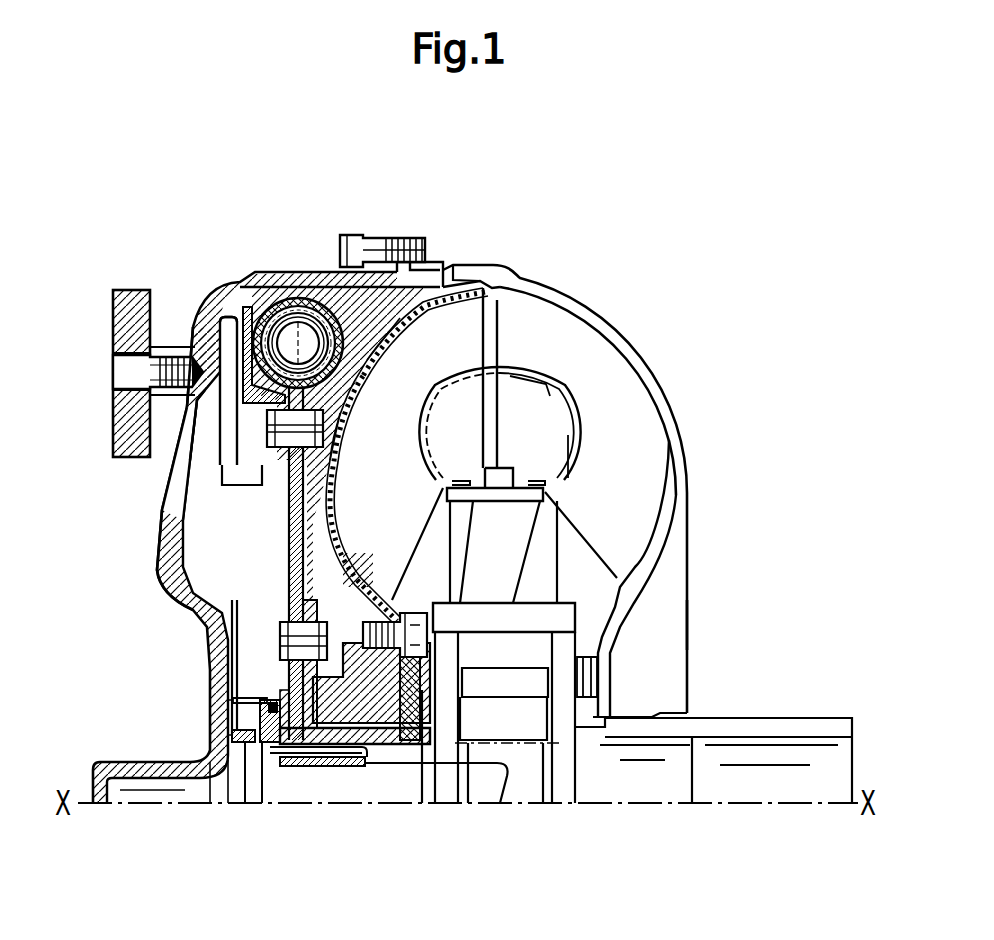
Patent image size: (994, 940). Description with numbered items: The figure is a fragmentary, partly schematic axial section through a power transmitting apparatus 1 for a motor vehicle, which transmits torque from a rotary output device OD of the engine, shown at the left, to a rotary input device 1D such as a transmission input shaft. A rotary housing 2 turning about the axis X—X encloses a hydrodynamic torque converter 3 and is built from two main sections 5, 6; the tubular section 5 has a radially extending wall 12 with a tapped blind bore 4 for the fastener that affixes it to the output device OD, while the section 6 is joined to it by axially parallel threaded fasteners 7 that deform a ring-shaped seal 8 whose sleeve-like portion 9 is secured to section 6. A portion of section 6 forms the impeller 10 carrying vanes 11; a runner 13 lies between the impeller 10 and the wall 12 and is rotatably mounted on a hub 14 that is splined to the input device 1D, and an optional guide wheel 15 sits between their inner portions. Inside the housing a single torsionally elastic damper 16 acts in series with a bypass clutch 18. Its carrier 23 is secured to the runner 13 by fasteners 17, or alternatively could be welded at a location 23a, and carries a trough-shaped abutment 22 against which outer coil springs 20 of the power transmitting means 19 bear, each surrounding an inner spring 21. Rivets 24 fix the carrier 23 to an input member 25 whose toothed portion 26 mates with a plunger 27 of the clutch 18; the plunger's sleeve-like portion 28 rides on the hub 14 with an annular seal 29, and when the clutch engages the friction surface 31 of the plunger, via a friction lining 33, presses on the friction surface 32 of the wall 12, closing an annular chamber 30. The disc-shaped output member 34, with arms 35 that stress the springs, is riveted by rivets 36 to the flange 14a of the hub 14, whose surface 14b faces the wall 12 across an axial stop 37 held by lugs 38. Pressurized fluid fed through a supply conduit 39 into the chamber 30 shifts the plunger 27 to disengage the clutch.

The power transmitting apparatus 1 is at (463, 190).
The rotary housing 2 is at (515, 290).
The hydrodynamic torque converter 3 is at (600, 350).
The tapped blind bore 4 is at (137, 407).
The housing section 5 is at (279, 296).
The housing section 6 is at (672, 420).
The threaded fasteners 7 is at (373, 263).
The ring-shaped seal 8 is at (420, 276).
The sleeve-like portion 9 is at (465, 273).
The impeller 10 is at (620, 393).
The vanes 11 is at (638, 410).
The wall 12 is at (163, 577).
The runner 13 is at (458, 337).
The hub 14 is at (350, 770).
The flange 14a is at (310, 620).
The radially extending surface 14b is at (233, 707).
The guide wheel 15 is at (495, 567).
The torsionally elastic damper 16 is at (305, 292).
The threaded fasteners 17 is at (420, 767).
The bypass clutch 18 is at (208, 330).
The power transmitting means 19 is at (326, 300).
The coil springs 20 is at (336, 364).
The coil springs 21 is at (337, 417).
The trough-shaped abutment 22 is at (296, 296).
The carrier 23 is at (350, 560).
The location 23a is at (357, 330).
The rivets 24 is at (286, 500).
The input member 25 is at (236, 292).
The portion 26 is at (258, 480).
The plunger 27 is at (217, 508).
The sleeve-like portion 28 is at (253, 730).
The annular seal 29 is at (273, 745).
The annular chamber 30 is at (165, 593).
The friction surface 31 is at (172, 367).
The friction surface 32 is at (217, 343).
The friction lining 33 is at (220, 355).
The output member 34 is at (233, 613).
The arms 35 is at (264, 292).
The rivets 36 is at (300, 768).
The axial stop 37 is at (228, 720).
The lugs 38 is at (257, 742).
The supply conduit 39 is at (323, 768).
The rotary output device OD is at (136, 300).
The base 1D is at (480, 790).